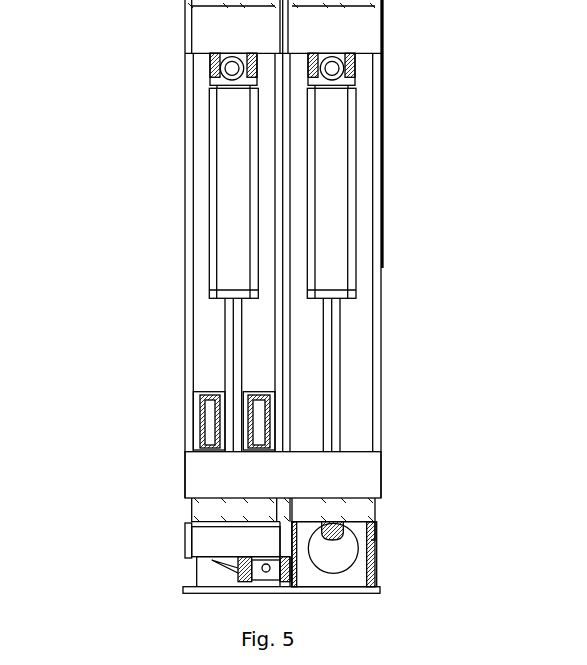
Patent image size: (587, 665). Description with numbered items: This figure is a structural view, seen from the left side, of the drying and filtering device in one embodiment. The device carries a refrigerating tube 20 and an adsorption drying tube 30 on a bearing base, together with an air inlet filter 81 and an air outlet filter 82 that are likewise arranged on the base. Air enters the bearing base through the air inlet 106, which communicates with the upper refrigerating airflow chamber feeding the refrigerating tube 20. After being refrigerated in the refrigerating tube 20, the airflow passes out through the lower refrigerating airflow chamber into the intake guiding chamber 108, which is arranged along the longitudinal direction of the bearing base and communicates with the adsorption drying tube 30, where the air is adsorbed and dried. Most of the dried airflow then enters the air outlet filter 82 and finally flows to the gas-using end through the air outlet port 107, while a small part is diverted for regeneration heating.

The refrigerating tube 20 is at (348, 390).
The adsorption drying tube 30 is at (206, 370).
The air inlet filter 81 is at (335, 202).
The air outlet filter 82 is at (232, 207).
The air inlet 106 is at (352, 50).
The air outlet port 107 is at (203, 52).
The intake guiding chamber 108 is at (203, 468).